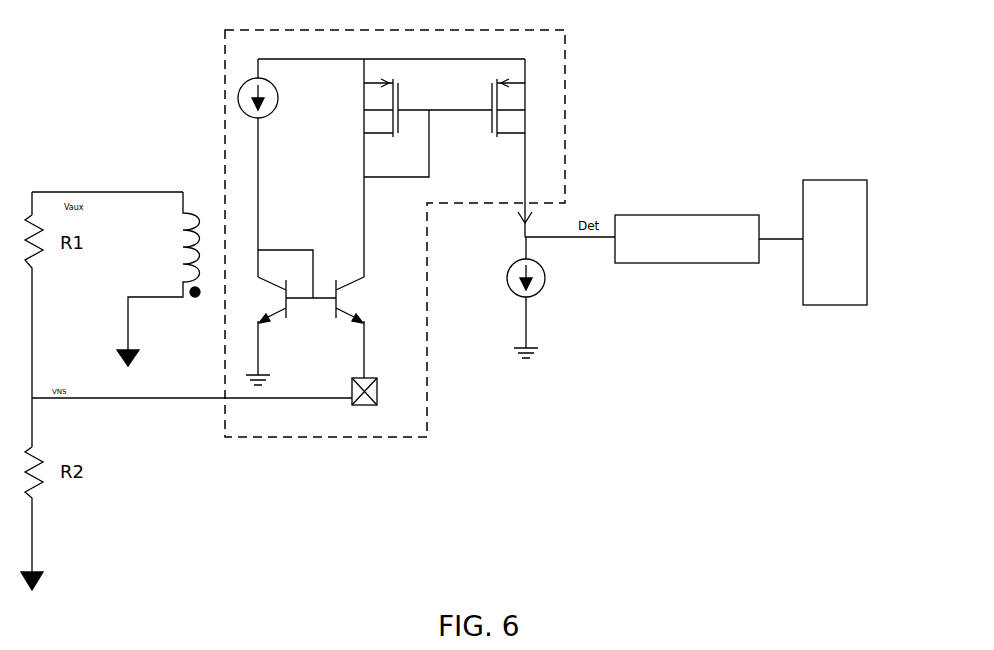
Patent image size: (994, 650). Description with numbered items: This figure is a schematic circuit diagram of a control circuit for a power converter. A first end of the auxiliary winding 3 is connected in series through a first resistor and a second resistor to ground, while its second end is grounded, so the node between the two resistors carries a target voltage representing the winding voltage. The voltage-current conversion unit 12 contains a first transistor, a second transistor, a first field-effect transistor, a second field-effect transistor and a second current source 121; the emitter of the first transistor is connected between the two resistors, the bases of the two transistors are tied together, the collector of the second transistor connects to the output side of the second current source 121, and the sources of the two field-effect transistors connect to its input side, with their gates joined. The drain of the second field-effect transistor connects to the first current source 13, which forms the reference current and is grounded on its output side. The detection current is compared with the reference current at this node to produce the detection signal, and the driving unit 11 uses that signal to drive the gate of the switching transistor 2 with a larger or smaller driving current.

The switching transistor 2 is at (870, 250).
The auxiliary winding 3 is at (195, 300).
The driving unit 11 is at (661, 212).
The voltage-current conversion unit 12 is at (568, 80).
The first current source 13 is at (548, 277).
The second current source 121 is at (237, 99).